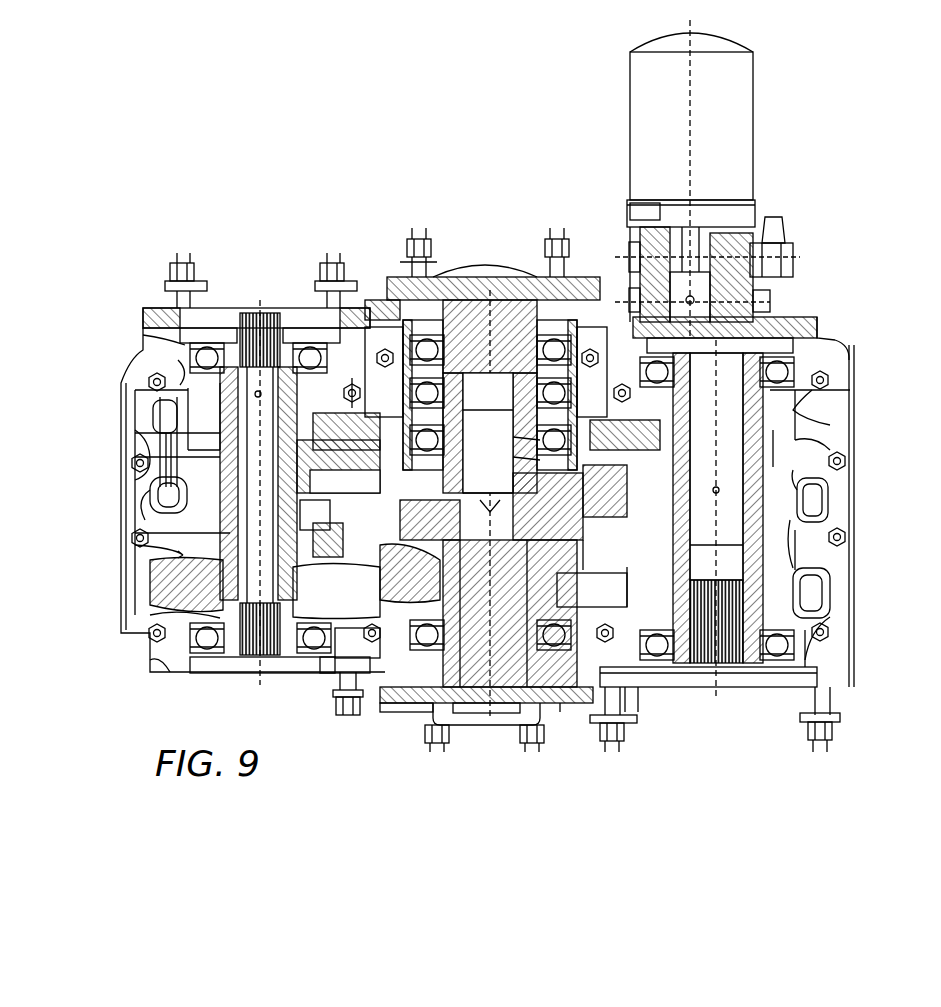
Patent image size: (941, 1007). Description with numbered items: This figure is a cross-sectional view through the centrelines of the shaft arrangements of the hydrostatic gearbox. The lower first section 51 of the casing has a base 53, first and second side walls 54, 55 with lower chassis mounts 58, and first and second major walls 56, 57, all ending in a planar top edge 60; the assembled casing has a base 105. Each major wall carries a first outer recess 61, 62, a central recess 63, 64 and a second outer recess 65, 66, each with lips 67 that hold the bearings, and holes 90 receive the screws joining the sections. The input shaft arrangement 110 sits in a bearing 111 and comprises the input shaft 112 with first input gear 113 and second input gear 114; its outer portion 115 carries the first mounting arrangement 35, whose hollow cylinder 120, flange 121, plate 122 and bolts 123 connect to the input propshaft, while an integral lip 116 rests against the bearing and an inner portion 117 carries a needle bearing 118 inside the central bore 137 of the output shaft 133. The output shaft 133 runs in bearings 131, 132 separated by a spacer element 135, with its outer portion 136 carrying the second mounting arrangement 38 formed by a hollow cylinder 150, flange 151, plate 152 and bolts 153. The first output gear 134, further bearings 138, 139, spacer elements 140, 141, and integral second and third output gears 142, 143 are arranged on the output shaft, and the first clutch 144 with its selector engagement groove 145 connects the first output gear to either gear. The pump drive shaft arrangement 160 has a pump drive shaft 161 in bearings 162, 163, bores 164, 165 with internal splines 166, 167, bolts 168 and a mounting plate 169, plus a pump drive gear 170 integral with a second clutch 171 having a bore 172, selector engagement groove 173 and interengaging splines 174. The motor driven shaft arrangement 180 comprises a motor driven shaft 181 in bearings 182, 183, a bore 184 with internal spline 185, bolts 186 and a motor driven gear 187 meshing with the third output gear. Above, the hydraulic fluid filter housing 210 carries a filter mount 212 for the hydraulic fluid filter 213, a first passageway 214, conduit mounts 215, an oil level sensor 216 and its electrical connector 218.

The first mounting arrangement 35 is at (565, 705).
The second mounting arrangement 38 is at (628, 268).
The first section 51 is at (857, 350).
The base 53 is at (845, 450).
The first side wall 54 is at (135, 410).
The second side wall 55 is at (860, 625).
The first major wall 56 is at (840, 690).
The second major wall 57 is at (832, 320).
The lower chassis mount 58 is at (125, 490).
The planar top edge 60 is at (845, 485).
The first outer recess 61 is at (150, 672).
The first outer recess 62 is at (170, 345).
The central recess 63 is at (340, 645).
The central recess 64 is at (580, 345).
The second outer recess 65 is at (790, 685).
The second outer recess 66 is at (840, 330).
The lip 67 is at (178, 372).
The hole 90 is at (148, 382).
The base 105 is at (858, 595).
The input shaft arrangement 110 is at (600, 556).
The bearing 111 is at (335, 673).
The input shaft 112 is at (458, 740).
The first input gear 113 is at (620, 572).
The second input gear 114 is at (584, 592).
The outer portion 115 is at (476, 670).
The integral lip 116 is at (495, 575).
The inner portion 117 is at (476, 528).
The needle bearing 118 is at (530, 527).
The hollow cylinder 120 is at (395, 703).
The flange 121 is at (385, 714).
The plate 122 is at (505, 740).
The bolts 123 is at (438, 752).
The bearing 131 is at (403, 345).
The bearing 132 is at (476, 403).
The output shaft 133 is at (476, 366).
The first output gear 134 is at (614, 526).
The spacer element 135 is at (360, 394).
The outer portion 136 is at (476, 328).
The central bore 137 is at (476, 484).
The bearing 138 is at (476, 444).
The bearing 139 is at (476, 464).
The spacer element 140 is at (600, 441).
The spacer element 141 is at (476, 423).
The second output gear 142 is at (322, 455).
The third output gear 143 is at (340, 440).
The first clutch 144 is at (418, 560).
The selector engagement groove 145 is at (380, 558).
The hollow cylinder 150 is at (378, 300).
The flange 151 is at (407, 265).
The plate 152 is at (500, 272).
The bolts 153 is at (432, 252).
The pump drive shaft arrangement 160 is at (150, 575).
The pump drive shaft 161 is at (160, 432).
The bearing 162 is at (290, 325).
The bearing 163 is at (300, 658).
The bore 164 is at (268, 313).
The bore 165 is at (236, 673).
The internal spline 166 is at (255, 313).
The internal spline 167 is at (258, 660).
The bolts 168 is at (185, 258).
The mounting plate 169 is at (143, 318).
The pump drive gear 170 is at (150, 600).
The second clutch 171 is at (150, 497).
The bore 172 is at (172, 490).
The selector engagement groove 173 is at (158, 512).
The interengaging splines 174 is at (302, 513).
The motor driven shaft arrangement 180 is at (845, 525).
The motor driven shaft 181 is at (845, 505).
The bearing 182 is at (690, 380).
The bearing 183 is at (640, 690).
The bore 184 is at (712, 580).
The internal spline 185 is at (716, 545).
The bolts 186 is at (820, 752).
The motor driven gear 187 is at (845, 430).
The hydraulic fluid filter housing 210 is at (683, 228).
The filter mount 212 is at (700, 228).
The hydraulic fluid filter 213 is at (652, 108).
The first passageway 214 is at (696, 274).
The conduit mounts 215 is at (630, 295).
The oil level sensor 216 is at (793, 262).
The electrical connector 218 is at (790, 225).